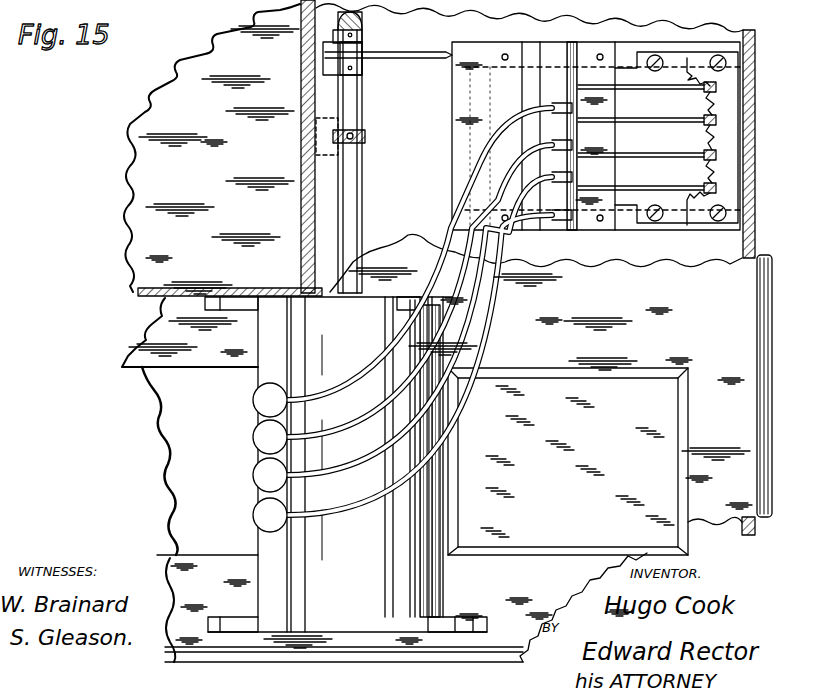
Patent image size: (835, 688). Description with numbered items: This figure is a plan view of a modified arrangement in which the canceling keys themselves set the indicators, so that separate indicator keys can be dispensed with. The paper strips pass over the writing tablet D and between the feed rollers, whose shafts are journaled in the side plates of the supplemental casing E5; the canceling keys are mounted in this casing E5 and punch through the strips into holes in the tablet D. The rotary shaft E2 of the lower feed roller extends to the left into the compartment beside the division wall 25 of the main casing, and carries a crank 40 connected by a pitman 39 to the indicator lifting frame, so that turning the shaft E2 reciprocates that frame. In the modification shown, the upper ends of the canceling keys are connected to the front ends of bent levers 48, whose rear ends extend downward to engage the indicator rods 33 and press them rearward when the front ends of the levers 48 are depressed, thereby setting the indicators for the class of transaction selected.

The division wall 25 is at (304, 205).
The pitman 39 is at (415, 49).
The crank 40 is at (335, 65).
The rotary shaft E2 is at (348, 101).
The indicator rods 33 is at (706, 92).
The bent levers 48 is at (361, 393).
The writing tablet D is at (177, 461).
The supplemental casing E5 is at (389, 457).